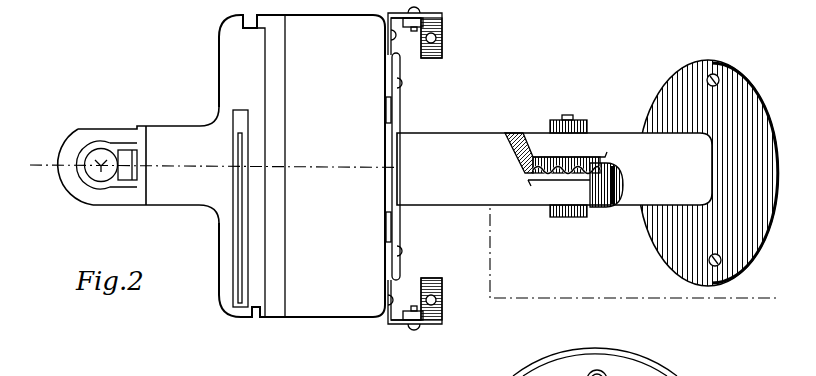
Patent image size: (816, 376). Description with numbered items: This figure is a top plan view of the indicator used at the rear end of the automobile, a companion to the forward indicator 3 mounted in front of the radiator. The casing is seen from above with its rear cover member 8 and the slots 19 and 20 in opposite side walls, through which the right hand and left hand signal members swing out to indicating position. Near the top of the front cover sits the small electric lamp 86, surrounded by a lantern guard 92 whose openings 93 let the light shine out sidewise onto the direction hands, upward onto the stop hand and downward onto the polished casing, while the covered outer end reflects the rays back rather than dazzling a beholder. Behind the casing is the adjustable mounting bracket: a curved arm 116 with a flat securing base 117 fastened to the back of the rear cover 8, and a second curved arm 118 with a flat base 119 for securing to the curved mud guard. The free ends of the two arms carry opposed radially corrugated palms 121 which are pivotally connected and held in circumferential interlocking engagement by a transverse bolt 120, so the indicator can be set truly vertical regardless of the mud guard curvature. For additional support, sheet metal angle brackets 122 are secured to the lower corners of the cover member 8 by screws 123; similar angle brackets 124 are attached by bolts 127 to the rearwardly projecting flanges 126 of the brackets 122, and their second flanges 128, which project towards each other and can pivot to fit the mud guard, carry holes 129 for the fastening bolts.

The forward indicator 3 is at (44, 154).
The rear cover member 8 is at (315, 313).
The slot 19 is at (254, 24).
The slot 20 is at (258, 318).
The electric lamp 86 is at (102, 181).
The lantern guard 92 is at (68, 195).
The openings 93 is at (107, 147).
The curved arm 116 is at (458, 145).
The flat securing base 117 is at (393, 100).
The second curved arm 118 is at (635, 198).
The flat base 119 is at (653, 87).
The transverse bolt 120 is at (574, 217).
The radially corrugated palms 121 is at (543, 157).
The angle brackets 122 is at (405, 339).
The screws 123 is at (392, 33).
The angle brackets 124 is at (436, 298).
The rearwardly projecting flanges 126 is at (420, 320).
The bolts 127 is at (397, 10).
The second flanges 128 is at (428, 285).
The holes 129 is at (432, 298).